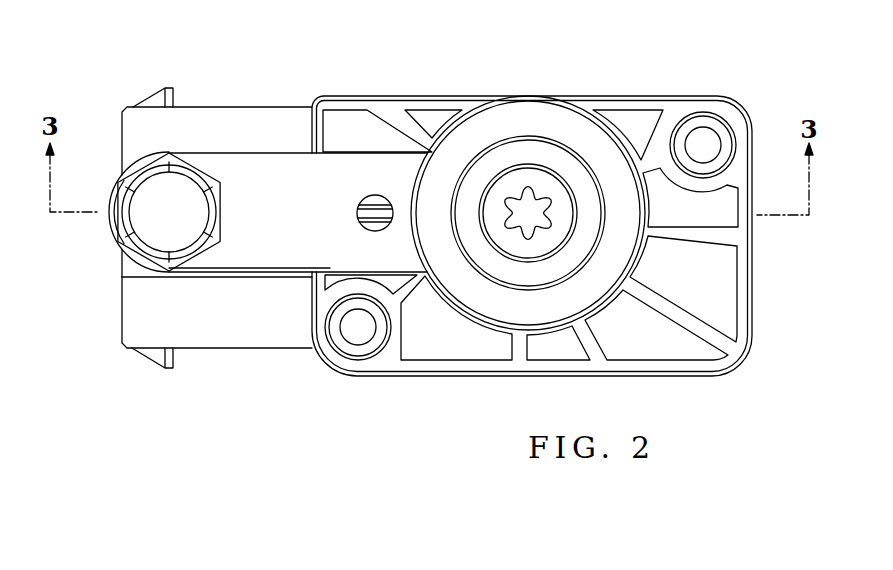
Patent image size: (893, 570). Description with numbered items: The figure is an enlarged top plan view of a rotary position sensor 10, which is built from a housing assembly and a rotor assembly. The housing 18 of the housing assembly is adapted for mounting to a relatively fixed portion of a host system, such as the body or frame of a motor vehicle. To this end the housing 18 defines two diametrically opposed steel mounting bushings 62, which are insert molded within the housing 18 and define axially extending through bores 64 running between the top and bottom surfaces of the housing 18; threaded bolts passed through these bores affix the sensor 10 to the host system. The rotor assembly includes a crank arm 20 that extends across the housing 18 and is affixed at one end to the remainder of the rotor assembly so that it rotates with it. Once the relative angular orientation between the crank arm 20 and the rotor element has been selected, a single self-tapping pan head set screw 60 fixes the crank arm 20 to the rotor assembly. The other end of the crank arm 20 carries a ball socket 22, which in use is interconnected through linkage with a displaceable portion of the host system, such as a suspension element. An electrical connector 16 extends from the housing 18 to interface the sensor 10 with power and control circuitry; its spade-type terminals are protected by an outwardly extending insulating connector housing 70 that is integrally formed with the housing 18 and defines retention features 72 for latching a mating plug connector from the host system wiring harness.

The rotary position sensor 10 is at (236, 387).
The electrical connector 16 is at (128, 322).
The housing 18 is at (755, 310).
The crank arm 20 is at (292, 168).
The ball socket 22 is at (133, 222).
The self-tapping pan head set screw 60 is at (533, 175).
The mounting bushing 62 is at (722, 128).
The through bore 64 is at (697, 140).
The connector housing 70 is at (128, 122).
The retention feature 72 is at (157, 100).